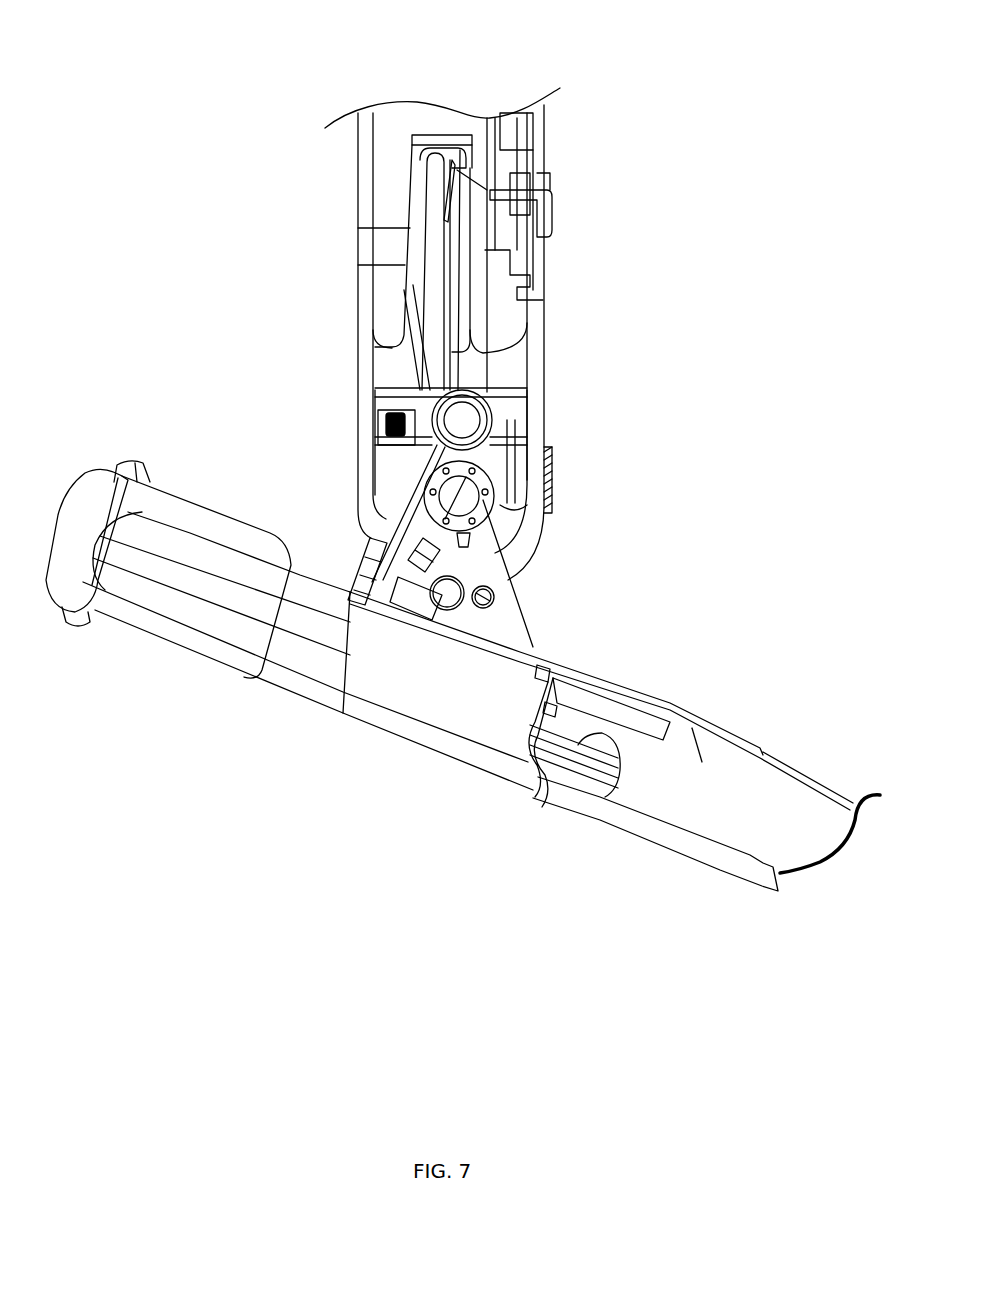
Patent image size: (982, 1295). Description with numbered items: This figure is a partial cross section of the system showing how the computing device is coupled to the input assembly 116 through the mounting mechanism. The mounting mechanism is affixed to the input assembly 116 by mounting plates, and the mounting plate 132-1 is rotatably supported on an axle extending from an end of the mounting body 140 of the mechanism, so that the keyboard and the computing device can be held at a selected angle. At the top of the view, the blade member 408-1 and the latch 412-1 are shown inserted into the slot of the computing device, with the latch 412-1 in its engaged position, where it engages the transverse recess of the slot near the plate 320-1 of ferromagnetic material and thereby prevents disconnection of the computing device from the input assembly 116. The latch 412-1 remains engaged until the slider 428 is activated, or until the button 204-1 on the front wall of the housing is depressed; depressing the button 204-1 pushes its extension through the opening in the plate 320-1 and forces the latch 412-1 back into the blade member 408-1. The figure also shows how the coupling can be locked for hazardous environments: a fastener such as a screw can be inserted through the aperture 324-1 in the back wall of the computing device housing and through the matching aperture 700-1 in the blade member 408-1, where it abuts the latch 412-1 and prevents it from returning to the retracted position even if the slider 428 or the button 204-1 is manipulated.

The blade member 408-1 is at (416, 126).
The plate 320-1 is at (496, 135).
The latch 412-1 is at (436, 214).
The aperture 324-1 is at (368, 242).
The matching aperture 700-1 is at (405, 248).
The button 204-1 is at (548, 197).
The mounting body 140 is at (357, 453).
The slider 428 is at (553, 469).
The mounting plate 132-1 is at (518, 620).
The input assembly 116 is at (716, 729).